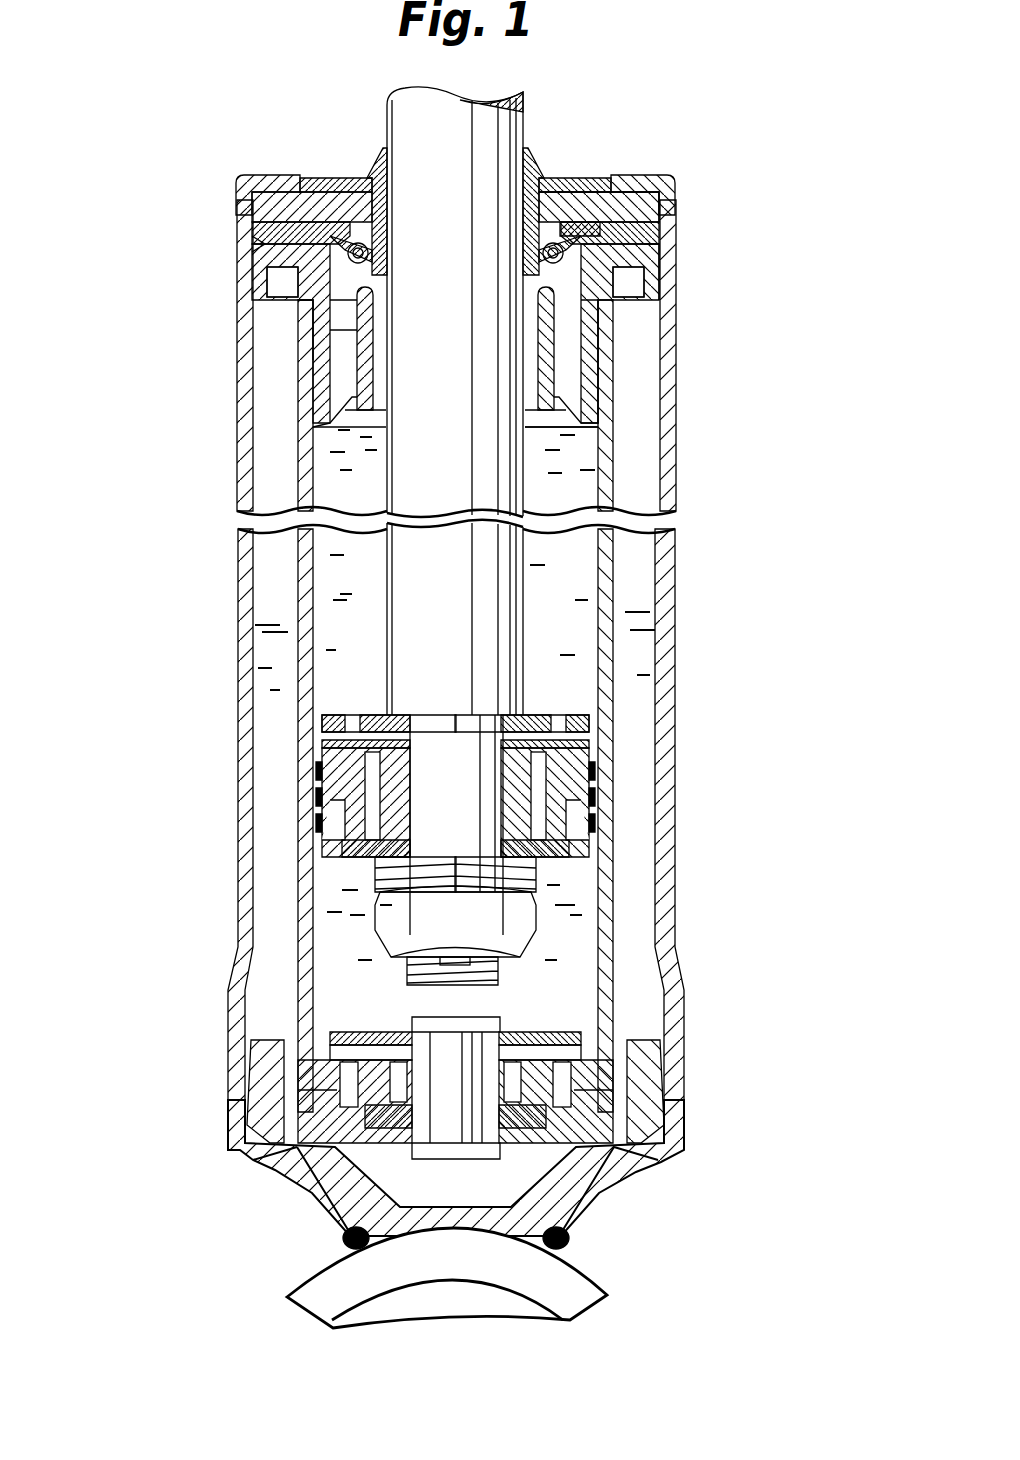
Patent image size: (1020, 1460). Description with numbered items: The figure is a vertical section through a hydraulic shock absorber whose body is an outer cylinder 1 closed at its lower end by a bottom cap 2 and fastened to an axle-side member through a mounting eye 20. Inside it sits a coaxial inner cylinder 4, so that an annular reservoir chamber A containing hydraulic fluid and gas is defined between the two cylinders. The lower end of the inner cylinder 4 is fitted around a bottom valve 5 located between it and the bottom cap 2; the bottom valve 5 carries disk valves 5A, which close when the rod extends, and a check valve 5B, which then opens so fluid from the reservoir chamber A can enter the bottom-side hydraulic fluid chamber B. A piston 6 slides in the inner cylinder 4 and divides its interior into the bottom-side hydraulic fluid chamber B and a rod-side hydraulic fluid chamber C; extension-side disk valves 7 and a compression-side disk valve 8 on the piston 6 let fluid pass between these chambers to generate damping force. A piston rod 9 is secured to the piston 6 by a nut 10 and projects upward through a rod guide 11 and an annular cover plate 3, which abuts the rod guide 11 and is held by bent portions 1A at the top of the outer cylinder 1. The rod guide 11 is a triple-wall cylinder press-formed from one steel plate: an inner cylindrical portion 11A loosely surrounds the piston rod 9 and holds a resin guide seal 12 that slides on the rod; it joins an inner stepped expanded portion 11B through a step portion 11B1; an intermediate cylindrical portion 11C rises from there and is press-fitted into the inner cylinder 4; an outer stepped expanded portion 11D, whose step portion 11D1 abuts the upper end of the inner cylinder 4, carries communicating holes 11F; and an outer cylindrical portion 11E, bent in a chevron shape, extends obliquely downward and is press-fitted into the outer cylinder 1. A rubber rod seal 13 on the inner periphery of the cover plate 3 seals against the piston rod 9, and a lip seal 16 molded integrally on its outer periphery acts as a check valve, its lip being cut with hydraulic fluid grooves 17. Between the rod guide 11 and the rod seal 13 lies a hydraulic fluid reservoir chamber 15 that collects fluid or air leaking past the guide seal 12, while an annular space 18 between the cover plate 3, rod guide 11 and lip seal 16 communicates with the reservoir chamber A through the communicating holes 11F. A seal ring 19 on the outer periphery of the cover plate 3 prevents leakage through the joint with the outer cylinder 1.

The outer cylinder 1 is at (680, 567).
The bent portions 1A is at (292, 188).
The bottom cap 2 is at (558, 1206).
The cover plate 3 is at (545, 190).
The inner cylinder 4 is at (310, 680).
The bottom valve 5 is at (315, 1115).
The disk valves 5A is at (330, 1148).
The check valve 5B is at (530, 1045).
The piston 6 is at (535, 785).
The extension-side disk valves 7 is at (560, 850).
The compression-side disk valve 8 is at (335, 752).
The piston rod 9 is at (420, 578).
The nut 10 is at (510, 915).
The rod guide 11 is at (680, 300).
The inner cylindrical portion 11A is at (555, 345).
The inner stepped expanded portion 11B is at (330, 422).
The step portion 11B1 is at (550, 420).
The intermediate cylindrical portion 11C is at (310, 332).
The outer stepped expanded portion 11D is at (265, 285).
The step portion 11D1 is at (612, 255).
The outer cylindrical portion 11E is at (680, 258).
The communicating holes 11F is at (665, 218).
The guide seal 12 is at (360, 375).
The rod seal 13 is at (392, 152).
The hydraulic fluid reservoir chamber 15 is at (340, 300).
The lip seal 16 is at (330, 240).
The hydraulic fluid grooves 17 is at (345, 240).
The annular space 18 is at (595, 225).
The seal ring 19 is at (250, 242).
The mounting eye 20 is at (310, 1292).
The reservoir chamber A is at (635, 405).
The bottom-side hydraulic fluid chamber B is at (335, 963).
The rod-side hydraulic fluid chamber C is at (565, 655).